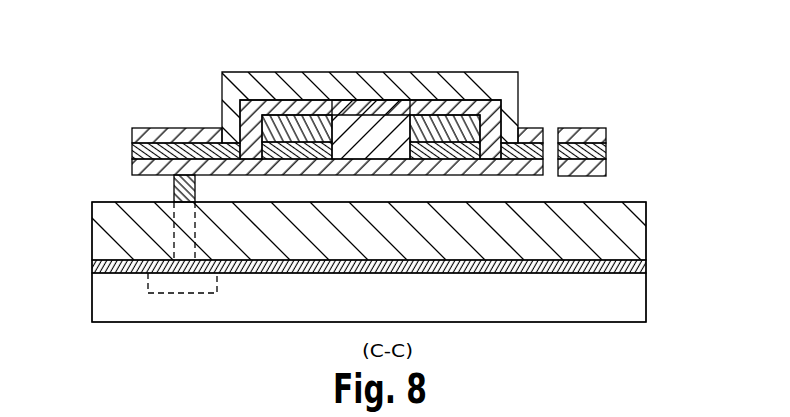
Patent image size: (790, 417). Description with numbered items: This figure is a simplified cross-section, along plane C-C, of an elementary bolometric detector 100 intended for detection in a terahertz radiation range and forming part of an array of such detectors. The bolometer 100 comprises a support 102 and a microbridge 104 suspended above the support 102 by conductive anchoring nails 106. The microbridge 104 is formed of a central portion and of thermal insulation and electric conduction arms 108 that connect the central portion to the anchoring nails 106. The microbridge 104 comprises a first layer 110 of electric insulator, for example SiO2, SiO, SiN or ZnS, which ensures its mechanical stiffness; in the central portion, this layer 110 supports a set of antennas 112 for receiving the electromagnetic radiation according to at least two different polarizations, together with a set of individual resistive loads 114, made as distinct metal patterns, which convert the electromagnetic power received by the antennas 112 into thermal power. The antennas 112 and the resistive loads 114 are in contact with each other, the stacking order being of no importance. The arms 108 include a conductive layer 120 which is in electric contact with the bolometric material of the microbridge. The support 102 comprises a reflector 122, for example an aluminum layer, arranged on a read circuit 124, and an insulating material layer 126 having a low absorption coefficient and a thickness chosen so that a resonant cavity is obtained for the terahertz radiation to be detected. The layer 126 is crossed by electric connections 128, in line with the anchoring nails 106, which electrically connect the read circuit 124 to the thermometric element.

The elementary bolometric detector 100 is at (141, 91).
The support 102 is at (92, 198).
The microbridge 104 is at (244, 47).
The conductive anchoring nails 106 is at (174, 196).
The thermal insulation and electric conduction arms 108 is at (176, 132).
The first layer of electric insulator 110 is at (383, 160).
The antennas 112 is at (328, 128).
The individual resistive loads 114 is at (318, 112).
The conductive layer 120 is at (150, 152).
The reflector 122 is at (645, 266).
The read circuit 124 is at (633, 305).
The insulating material layer 126 is at (627, 227).
The electric connections 128 is at (187, 223).